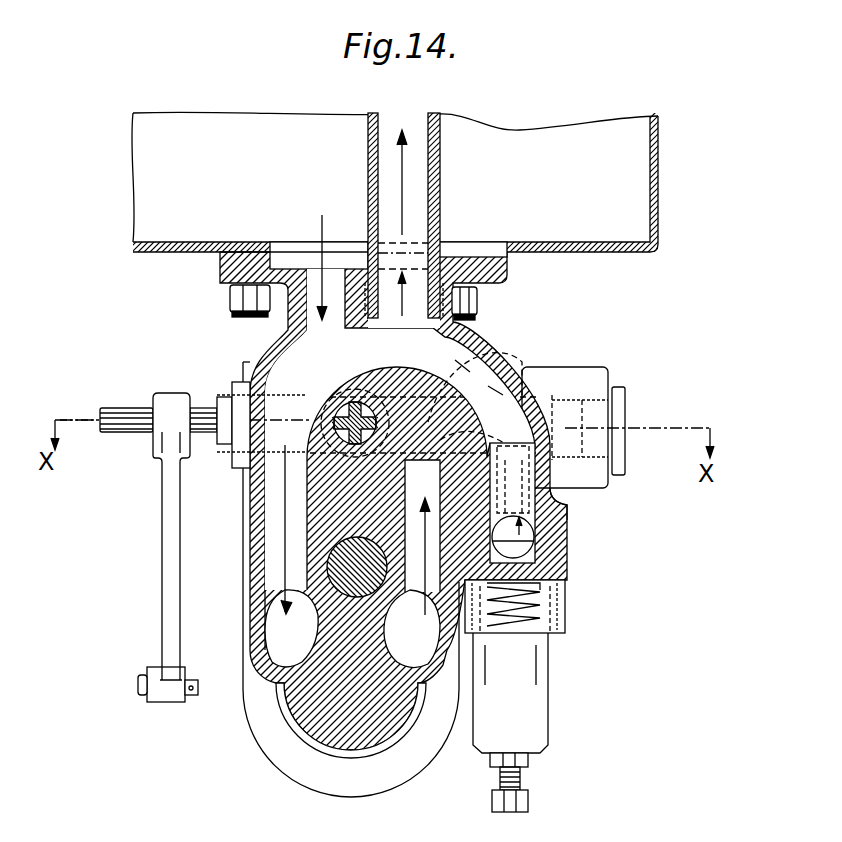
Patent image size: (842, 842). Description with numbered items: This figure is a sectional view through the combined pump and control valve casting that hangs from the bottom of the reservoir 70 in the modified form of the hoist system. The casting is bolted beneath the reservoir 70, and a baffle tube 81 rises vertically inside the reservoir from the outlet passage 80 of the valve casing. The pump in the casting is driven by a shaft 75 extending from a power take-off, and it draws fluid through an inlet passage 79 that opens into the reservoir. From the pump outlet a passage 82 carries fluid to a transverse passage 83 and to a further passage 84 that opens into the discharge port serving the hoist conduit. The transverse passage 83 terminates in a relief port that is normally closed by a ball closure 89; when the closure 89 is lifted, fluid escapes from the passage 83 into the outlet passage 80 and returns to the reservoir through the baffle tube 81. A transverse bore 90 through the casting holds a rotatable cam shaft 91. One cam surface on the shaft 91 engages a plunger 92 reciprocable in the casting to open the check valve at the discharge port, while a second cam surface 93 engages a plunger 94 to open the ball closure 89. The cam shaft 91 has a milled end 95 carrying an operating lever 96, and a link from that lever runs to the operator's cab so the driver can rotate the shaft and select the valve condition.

The reservoir 70 is at (658, 186).
The baffle tube 81 is at (440, 181).
The outlet passage 80 is at (470, 340).
The passage 84 is at (400, 429).
The plunger 92 is at (352, 403).
The cam shaft 91 is at (498, 360).
The transverse bore 90 is at (527, 368).
The cam surface 93 is at (525, 390).
The plunger 94 is at (566, 426).
The transverse passage 83 is at (605, 487).
The ball closure 89 is at (522, 556).
The passage 82 is at (505, 596).
The inlet passage 79 is at (268, 537).
The shaft 75 is at (345, 573).
The milled end 95 is at (113, 418).
The operating lever 96 is at (175, 491).